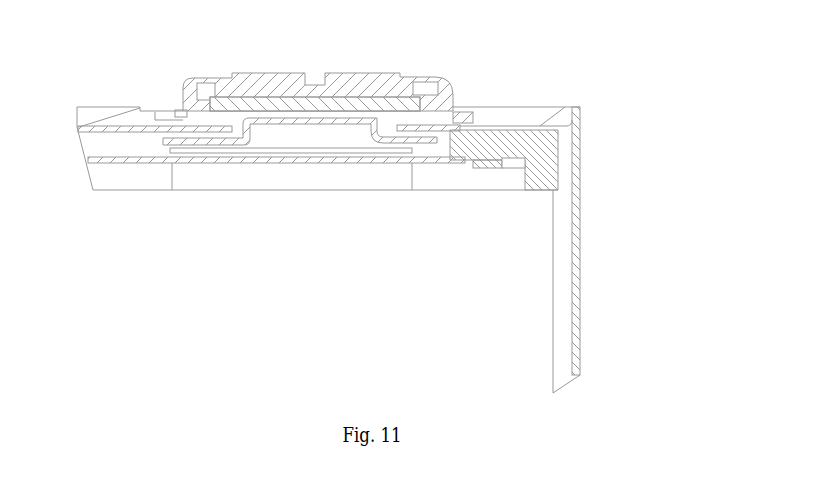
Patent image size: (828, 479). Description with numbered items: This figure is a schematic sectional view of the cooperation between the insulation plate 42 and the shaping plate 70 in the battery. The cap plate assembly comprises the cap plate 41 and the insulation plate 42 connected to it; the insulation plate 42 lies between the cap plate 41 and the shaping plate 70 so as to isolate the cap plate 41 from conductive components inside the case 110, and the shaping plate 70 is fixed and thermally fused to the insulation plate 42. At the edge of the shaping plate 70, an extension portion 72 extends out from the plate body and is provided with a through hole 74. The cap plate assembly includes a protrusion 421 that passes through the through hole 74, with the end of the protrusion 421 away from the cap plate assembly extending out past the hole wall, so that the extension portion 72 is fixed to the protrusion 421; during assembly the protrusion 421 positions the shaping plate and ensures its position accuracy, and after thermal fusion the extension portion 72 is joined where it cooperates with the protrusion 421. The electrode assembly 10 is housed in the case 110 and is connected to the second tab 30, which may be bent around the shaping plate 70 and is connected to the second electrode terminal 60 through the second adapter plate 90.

The electrode assembly 10 is at (540, 310).
The case 110 is at (577, 240).
The second tab 30 is at (278, 182).
The cap plate 41 is at (567, 117).
The insulation plate 42 is at (550, 150).
The protrusion 421 is at (483, 165).
The second electrode terminal 60 is at (265, 82).
The shaping plate 70 is at (202, 163).
The extension portion 72 is at (513, 128).
The through hole 74 is at (520, 165).
The second adapter plate 90 is at (355, 112).